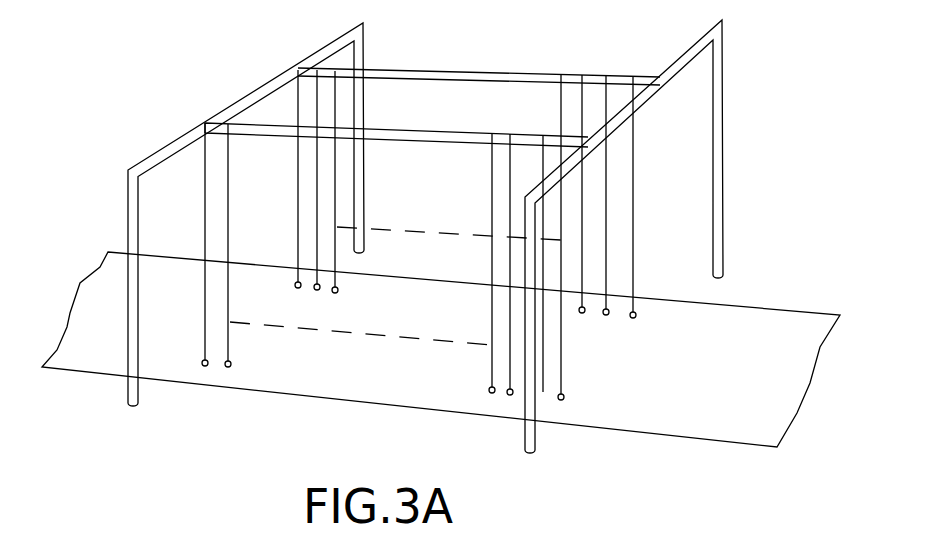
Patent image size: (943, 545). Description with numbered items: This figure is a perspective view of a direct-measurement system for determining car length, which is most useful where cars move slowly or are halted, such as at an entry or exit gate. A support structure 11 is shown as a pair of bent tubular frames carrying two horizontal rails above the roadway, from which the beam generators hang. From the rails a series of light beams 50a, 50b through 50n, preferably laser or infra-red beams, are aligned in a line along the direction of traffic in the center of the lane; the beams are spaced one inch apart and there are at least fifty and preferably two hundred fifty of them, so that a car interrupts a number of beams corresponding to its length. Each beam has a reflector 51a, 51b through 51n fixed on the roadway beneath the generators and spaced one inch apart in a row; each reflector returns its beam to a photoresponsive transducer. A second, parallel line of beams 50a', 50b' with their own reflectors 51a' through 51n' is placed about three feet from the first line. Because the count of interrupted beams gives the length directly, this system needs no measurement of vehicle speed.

The support structure 11 is at (364, 52).
The light beam 50n is at (300, 90).
The light beam 50b is at (624, 162).
The light beam 50a is at (668, 194).
The reflector 51n is at (269, 241).
The reflector 51b is at (606, 306).
The reflector 51a is at (661, 287).
The light beam of second line 50a' is at (394, 242).
The light beam of second line 50b' is at (597, 263).
The reflector of second line 51n' is at (189, 408).
The reflector of second line 51a' is at (581, 442).